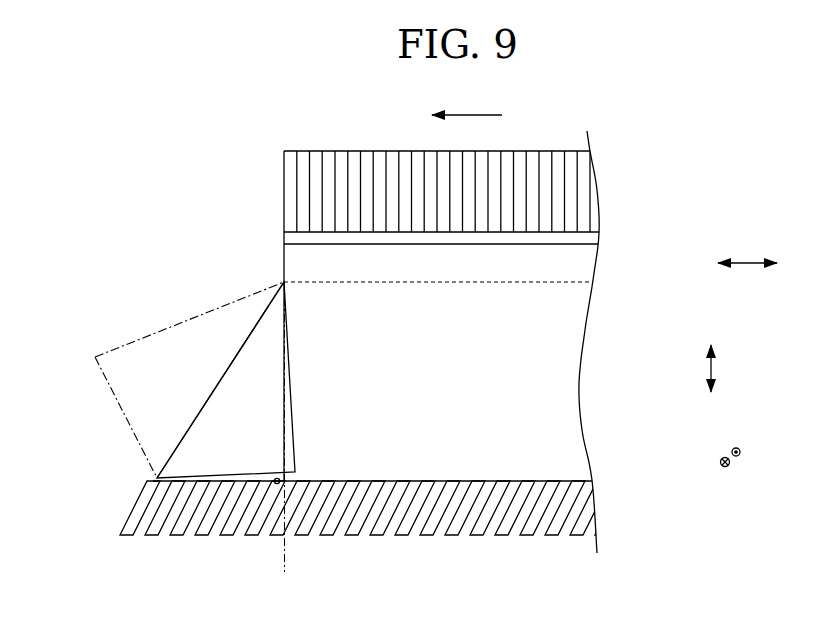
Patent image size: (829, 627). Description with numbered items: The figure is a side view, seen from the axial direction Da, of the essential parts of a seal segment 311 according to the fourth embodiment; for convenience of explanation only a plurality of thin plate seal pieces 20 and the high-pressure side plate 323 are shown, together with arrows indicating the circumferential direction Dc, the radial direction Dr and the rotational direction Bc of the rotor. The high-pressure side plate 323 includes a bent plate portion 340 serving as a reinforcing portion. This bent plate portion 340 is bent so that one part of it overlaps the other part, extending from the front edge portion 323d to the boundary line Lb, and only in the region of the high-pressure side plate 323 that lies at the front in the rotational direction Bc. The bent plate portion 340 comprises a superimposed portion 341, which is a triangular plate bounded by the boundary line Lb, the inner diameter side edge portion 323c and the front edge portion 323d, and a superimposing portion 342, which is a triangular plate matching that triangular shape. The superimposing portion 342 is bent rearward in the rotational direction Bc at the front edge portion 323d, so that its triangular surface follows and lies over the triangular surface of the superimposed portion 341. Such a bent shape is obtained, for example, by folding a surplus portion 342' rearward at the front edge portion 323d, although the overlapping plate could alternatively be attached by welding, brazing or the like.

The seal segment 311 is at (673, 150).
The thin plate seal pieces 20 is at (588, 193).
The high-pressure side plate 323 is at (558, 385).
The inner diameter side edge portion 323c is at (563, 479).
The front edge portion 323d is at (192, 424).
The superimposing portion 342 is at (226, 443).
The surplus portion 342' is at (189, 368).
The superimposed portion 341 is at (279, 484).
The bent plate portion 340 is at (322, 425).
The boundary line Lb is at (289, 444).
The rotational direction Bc is at (467, 98).
The circumferential direction Dc is at (747, 244).
The radial direction Dr is at (730, 368).
The axial direction Da is at (751, 458).